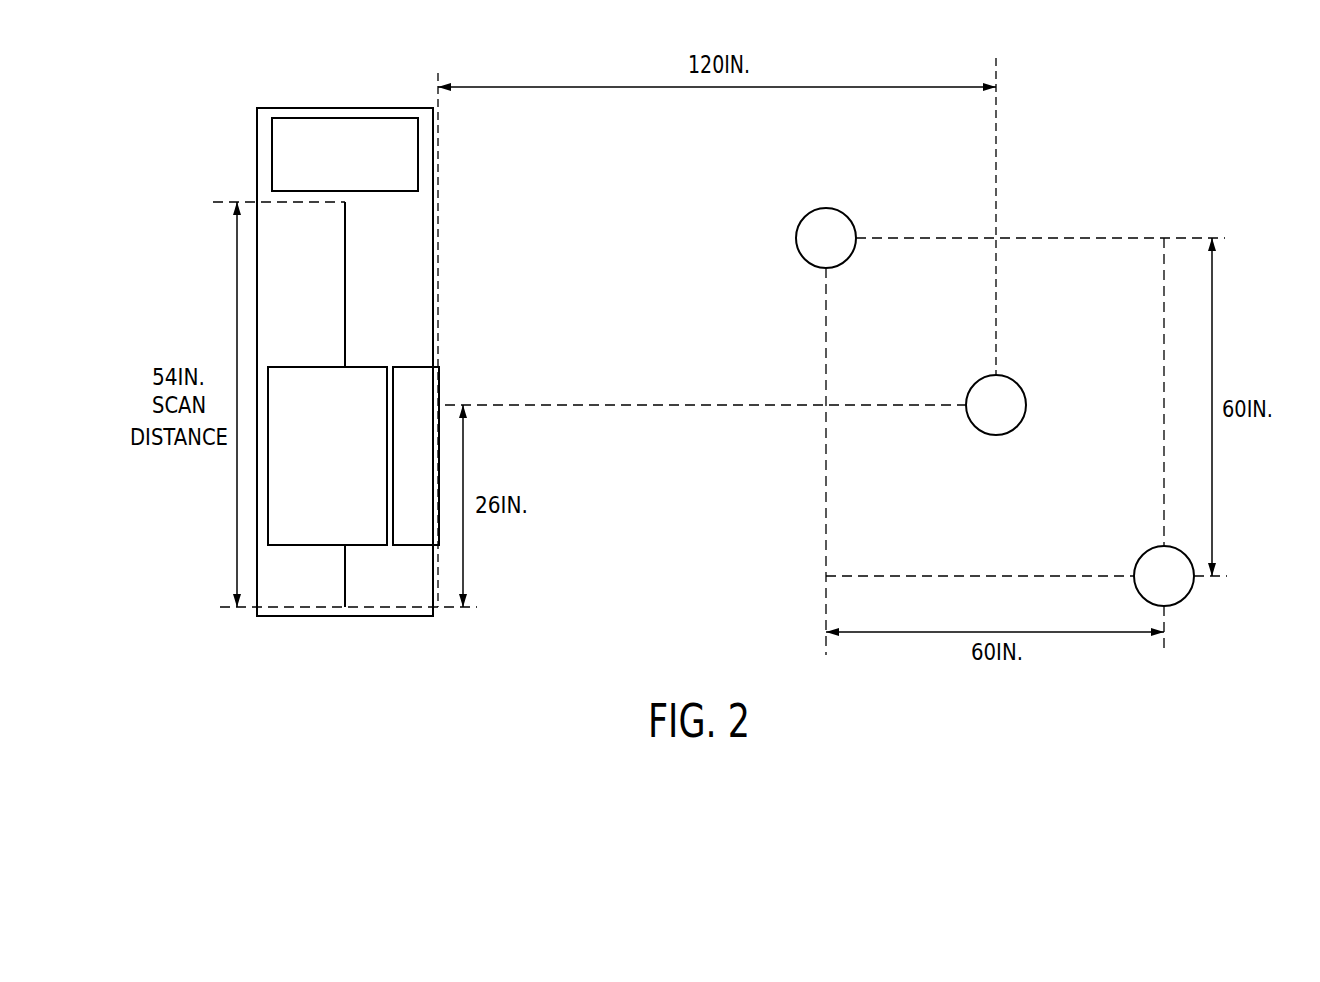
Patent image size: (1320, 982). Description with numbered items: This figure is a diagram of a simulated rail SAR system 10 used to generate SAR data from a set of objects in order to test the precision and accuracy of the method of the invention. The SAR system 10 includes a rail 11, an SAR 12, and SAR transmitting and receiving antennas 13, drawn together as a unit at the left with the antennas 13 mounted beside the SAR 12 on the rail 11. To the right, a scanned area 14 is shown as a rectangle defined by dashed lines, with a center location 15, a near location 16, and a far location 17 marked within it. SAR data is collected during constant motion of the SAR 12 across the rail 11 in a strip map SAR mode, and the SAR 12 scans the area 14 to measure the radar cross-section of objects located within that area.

The rail SAR system 10 is at (219, 134).
The rail 11 is at (398, 287).
The SAR 12 is at (328, 547).
The SAR transmitting and receiving antennas 13 is at (420, 547).
The scanned area 14 is at (1181, 210).
The center location 15 is at (975, 382).
The near location 16 is at (825, 207).
The far location 17 is at (1142, 554).